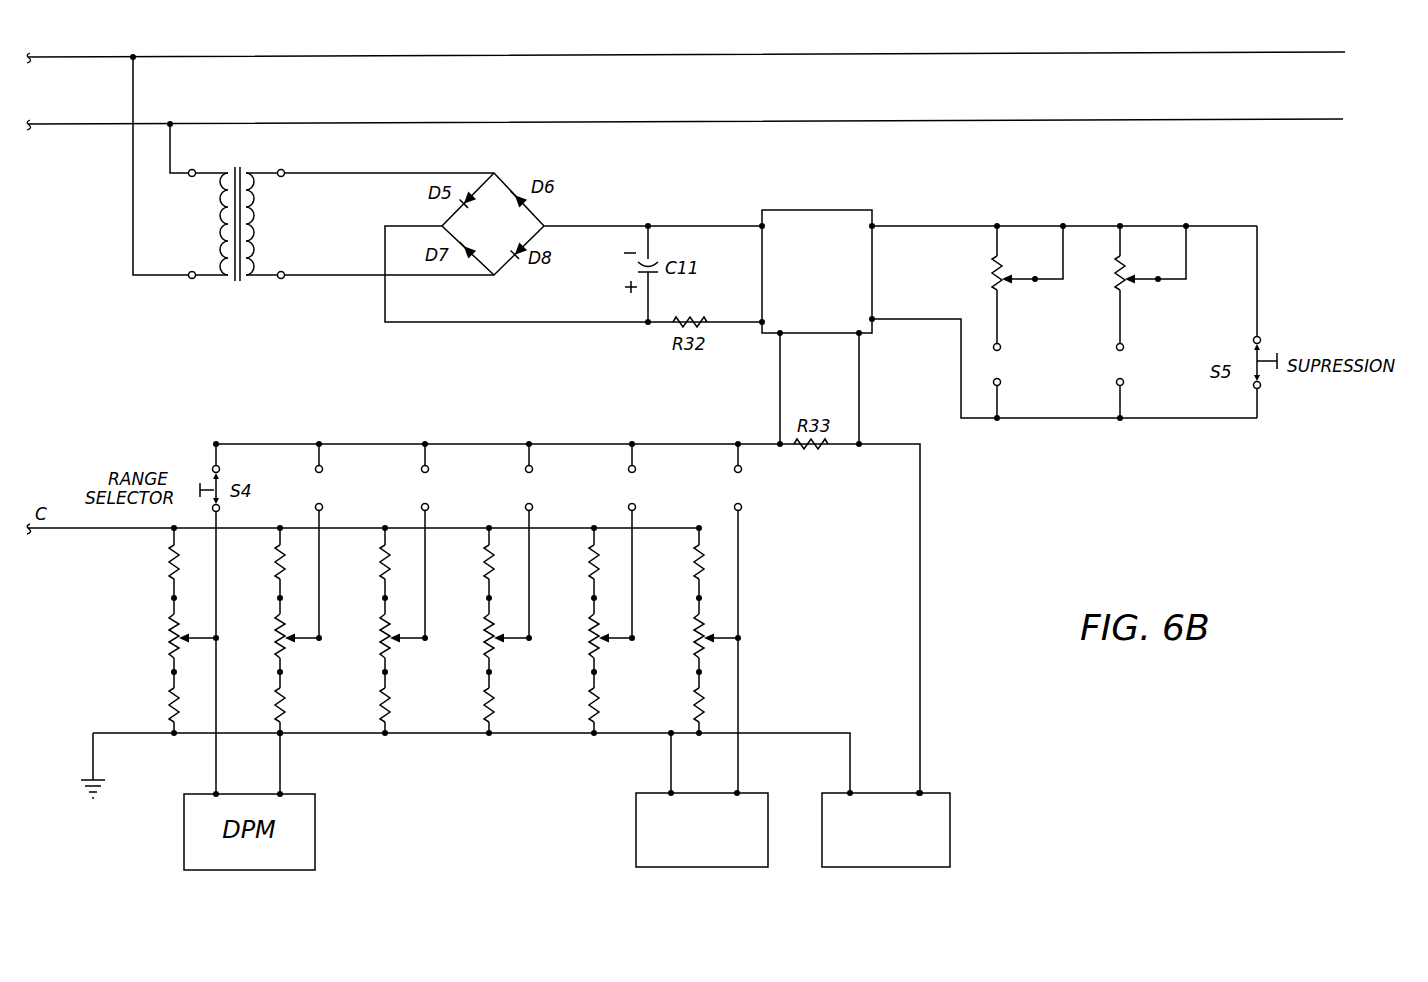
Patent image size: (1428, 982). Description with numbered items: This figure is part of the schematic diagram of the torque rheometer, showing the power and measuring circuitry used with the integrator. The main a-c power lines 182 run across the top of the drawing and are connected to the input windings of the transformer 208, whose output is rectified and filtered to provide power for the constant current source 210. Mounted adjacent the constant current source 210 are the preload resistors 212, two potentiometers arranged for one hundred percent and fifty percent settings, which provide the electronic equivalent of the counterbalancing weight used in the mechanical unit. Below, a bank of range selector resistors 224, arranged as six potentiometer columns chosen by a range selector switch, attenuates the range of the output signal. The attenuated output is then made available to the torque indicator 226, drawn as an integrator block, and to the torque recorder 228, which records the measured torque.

The power lines 182 is at (120, 45).
The transformer 208 is at (242, 170).
The constant current source 210 is at (836, 190).
The preload resistors 212 is at (1032, 222).
The range selector resistors 224 is at (168, 626).
The torque indicator 226 is at (684, 869).
The torque recorder 228 is at (858, 869).